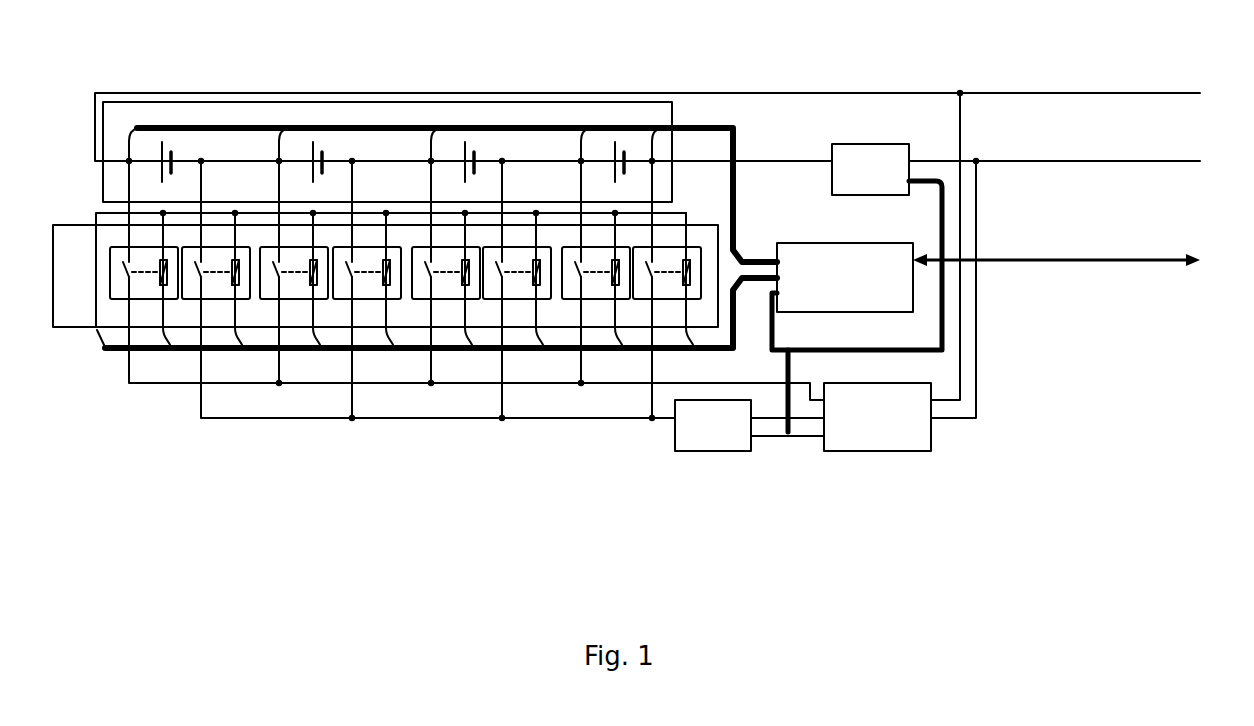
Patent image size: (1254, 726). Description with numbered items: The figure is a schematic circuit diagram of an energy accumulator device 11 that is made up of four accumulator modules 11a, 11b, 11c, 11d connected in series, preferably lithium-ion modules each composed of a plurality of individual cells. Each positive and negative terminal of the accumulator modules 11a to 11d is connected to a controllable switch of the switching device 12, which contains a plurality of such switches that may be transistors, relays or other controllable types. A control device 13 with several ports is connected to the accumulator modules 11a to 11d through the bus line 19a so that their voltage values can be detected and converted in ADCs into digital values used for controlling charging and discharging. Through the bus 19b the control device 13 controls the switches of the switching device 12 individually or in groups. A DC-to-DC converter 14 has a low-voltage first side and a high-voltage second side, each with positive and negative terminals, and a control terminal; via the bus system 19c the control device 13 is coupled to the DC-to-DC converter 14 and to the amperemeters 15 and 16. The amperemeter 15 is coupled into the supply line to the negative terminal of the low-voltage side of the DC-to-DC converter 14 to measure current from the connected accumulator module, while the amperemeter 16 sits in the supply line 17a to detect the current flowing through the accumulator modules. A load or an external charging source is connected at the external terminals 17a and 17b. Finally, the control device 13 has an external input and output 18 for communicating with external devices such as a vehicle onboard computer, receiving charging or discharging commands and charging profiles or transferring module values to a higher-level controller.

The energy accumulator device 11 is at (347, 100).
The accumulator module 11a is at (157, 140).
The accumulator module 11b is at (321, 146).
The accumulator module 11c is at (463, 146).
The accumulator module 11d is at (615, 146).
The switching device 12 is at (82, 328).
The control device 13 is at (818, 243).
The DC-to-DC converter 14 is at (905, 453).
The amperemeter 15 is at (675, 438).
The amperemeter 16 is at (871, 143).
The supply line 17a is at (1145, 161).
The external terminal 17b is at (1133, 93).
The external input and output 18 is at (1168, 265).
The bus line 19a is at (710, 124).
The bus 19b is at (168, 356).
The bus system 19c is at (963, 340).